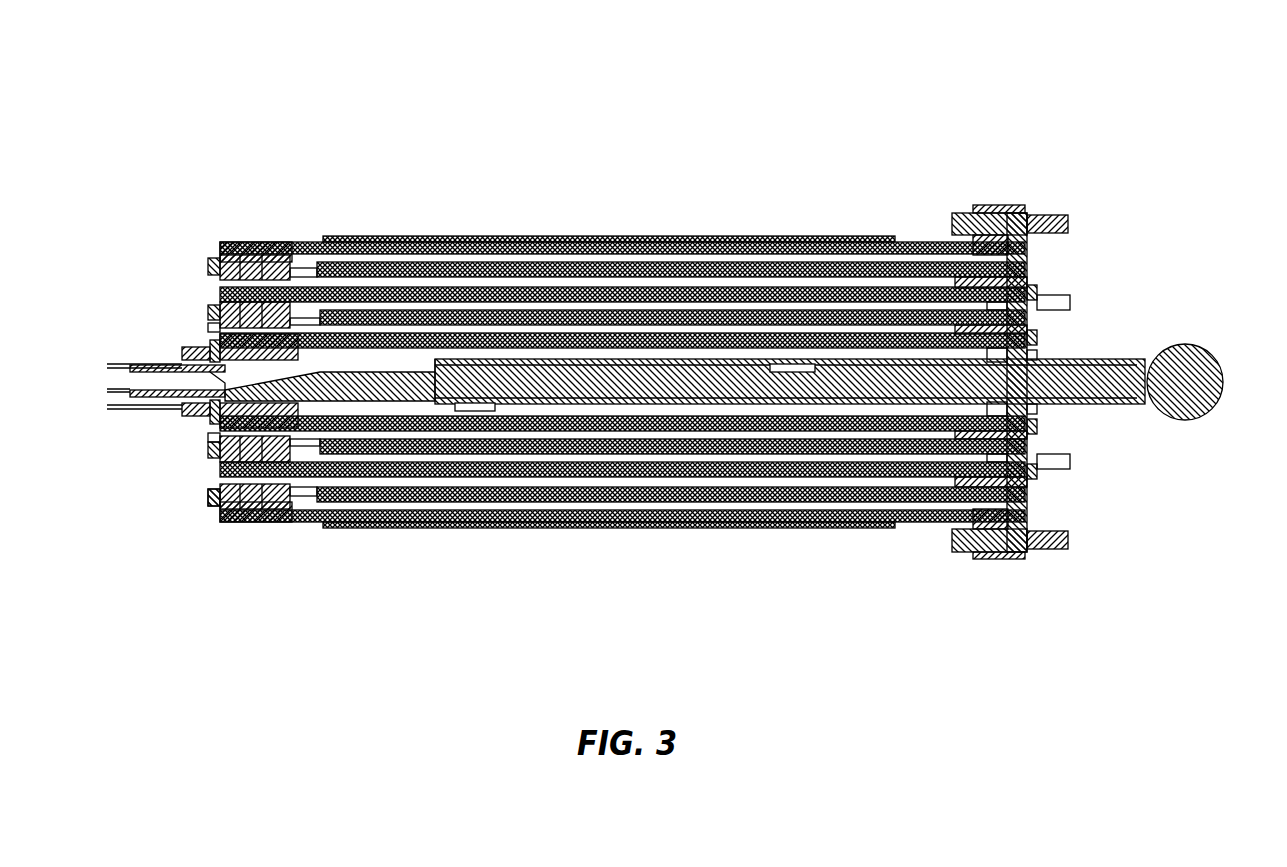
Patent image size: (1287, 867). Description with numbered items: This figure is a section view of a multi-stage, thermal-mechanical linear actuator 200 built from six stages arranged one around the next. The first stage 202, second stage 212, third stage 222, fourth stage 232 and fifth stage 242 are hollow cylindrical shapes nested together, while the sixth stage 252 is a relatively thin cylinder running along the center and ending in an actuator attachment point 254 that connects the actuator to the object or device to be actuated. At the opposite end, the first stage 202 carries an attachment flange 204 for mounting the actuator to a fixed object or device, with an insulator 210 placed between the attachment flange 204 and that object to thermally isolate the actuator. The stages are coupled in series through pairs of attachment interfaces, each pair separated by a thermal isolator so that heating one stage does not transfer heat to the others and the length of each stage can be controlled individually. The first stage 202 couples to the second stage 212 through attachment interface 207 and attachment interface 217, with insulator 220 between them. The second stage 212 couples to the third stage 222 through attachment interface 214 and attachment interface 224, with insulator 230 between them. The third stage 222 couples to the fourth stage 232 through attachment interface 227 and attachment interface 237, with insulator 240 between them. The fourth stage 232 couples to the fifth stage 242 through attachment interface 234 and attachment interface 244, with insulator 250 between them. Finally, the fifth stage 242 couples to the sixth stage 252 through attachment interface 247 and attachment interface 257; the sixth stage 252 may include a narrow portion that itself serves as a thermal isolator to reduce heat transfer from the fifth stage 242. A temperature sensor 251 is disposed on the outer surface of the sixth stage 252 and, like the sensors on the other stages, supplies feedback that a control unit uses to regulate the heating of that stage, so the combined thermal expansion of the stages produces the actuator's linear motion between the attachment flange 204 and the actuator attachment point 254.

The multi-stage, thermal-mechanical linear actuator 200 is at (138, 143).
The first stage 202 is at (285, 524).
The attachment flange 204 is at (985, 553).
The attachment interface 207 is at (230, 524).
The insulator 210 is at (1032, 245).
The second stage 212 is at (393, 502).
The attachment interface 214 is at (1032, 490).
The attachment interface 217 is at (215, 518).
The insulator 220 is at (226, 243).
The third stage 222 is at (552, 478).
The attachment interface 224 is at (935, 454).
The attachment interface 227 is at (222, 476).
The insulator 230 is at (1035, 275).
The fourth stage 232 is at (692, 455).
The attachment interface 234 is at (1032, 466).
The attachment interface 237 is at (225, 440).
The insulator 240 is at (228, 282).
The fifth stage 242 is at (805, 432).
The attachment interface 244 is at (1045, 548).
The attachment interface 247 is at (215, 410).
The insulator 250 is at (1040, 338).
The temperature sensor 251 is at (790, 362).
The sixth stage 252 is at (1135, 401).
The actuator attachment point 254 is at (1195, 370).
The attachment interface 257 is at (188, 347).